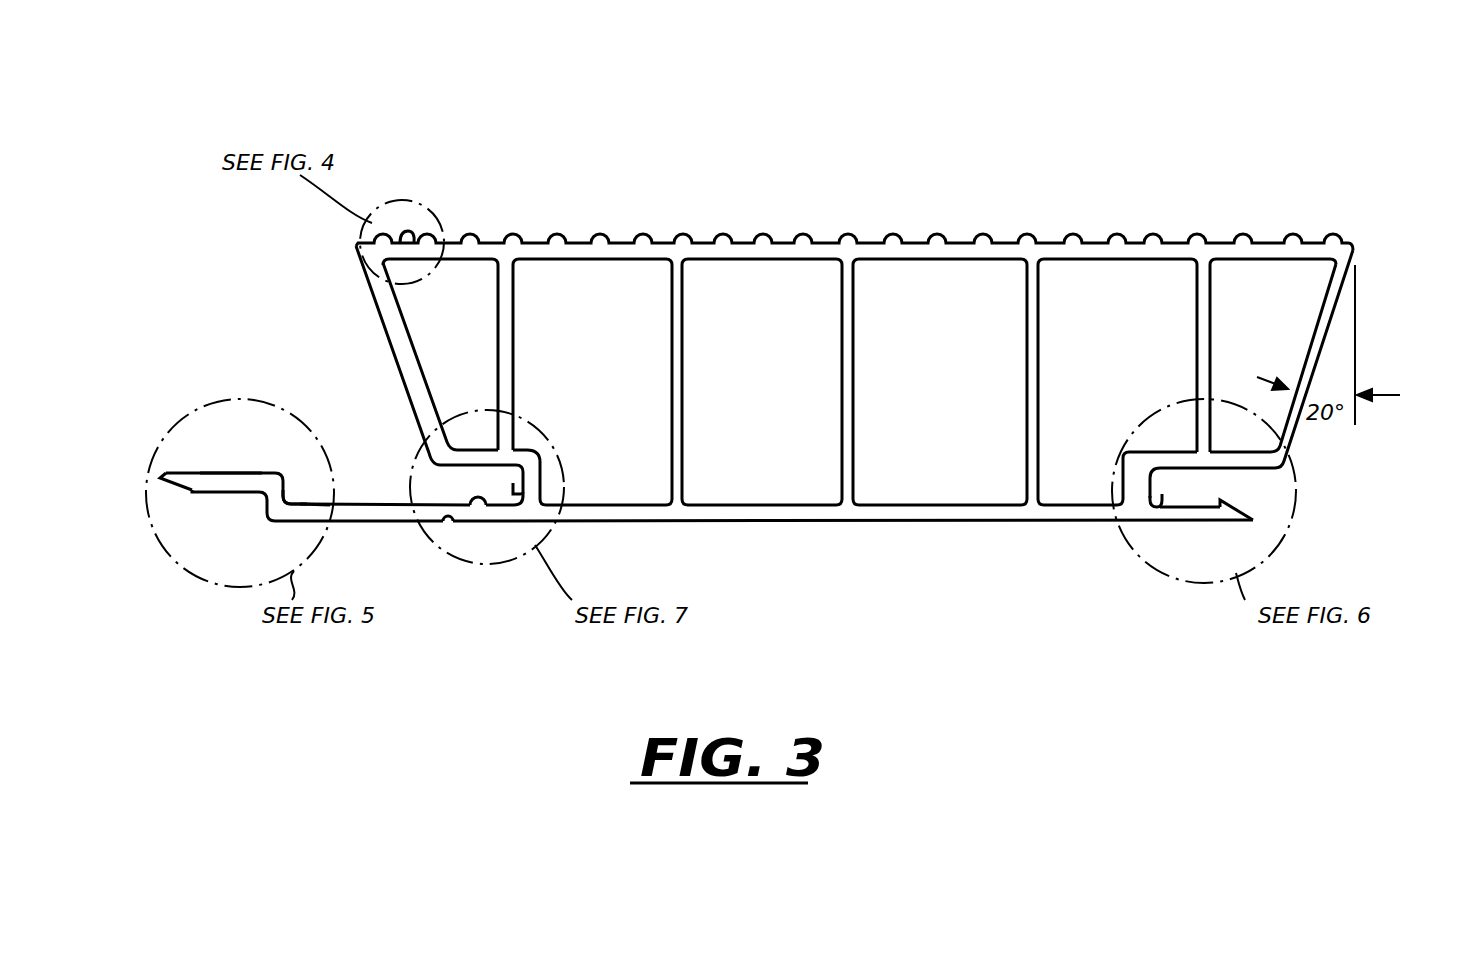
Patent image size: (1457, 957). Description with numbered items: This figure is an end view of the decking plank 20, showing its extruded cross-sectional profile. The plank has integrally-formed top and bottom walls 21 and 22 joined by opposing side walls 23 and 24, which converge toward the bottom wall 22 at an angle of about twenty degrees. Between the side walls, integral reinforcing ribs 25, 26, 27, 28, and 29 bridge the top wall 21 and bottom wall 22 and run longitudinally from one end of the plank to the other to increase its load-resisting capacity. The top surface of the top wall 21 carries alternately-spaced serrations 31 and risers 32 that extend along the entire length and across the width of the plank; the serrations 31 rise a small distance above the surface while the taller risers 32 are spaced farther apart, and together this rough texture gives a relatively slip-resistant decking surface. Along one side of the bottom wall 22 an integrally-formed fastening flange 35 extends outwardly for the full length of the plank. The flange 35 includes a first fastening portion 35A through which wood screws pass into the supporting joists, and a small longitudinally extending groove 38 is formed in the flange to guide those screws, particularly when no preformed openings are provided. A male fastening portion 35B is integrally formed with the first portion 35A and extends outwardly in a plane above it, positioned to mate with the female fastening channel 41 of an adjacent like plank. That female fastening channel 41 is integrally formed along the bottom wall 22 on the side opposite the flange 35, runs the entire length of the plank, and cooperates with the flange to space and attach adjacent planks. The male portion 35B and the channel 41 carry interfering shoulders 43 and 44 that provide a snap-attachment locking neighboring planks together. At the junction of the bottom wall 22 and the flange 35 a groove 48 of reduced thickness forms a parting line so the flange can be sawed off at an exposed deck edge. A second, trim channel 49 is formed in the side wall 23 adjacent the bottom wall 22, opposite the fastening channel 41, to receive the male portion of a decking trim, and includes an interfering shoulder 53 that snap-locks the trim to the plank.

The decking plank 20 is at (728, 147).
The top wall 21 is at (752, 274).
The bottom wall 22 is at (908, 520).
The side wall 23 is at (408, 370).
The side wall 24 is at (1327, 303).
The reinforcing rib 25 is at (508, 300).
The reinforcing rib 26 is at (672, 307).
The reinforcing rib 27 is at (847, 307).
The reinforcing rib 28 is at (1033, 303).
The reinforcing rib 29 is at (1200, 288).
The serrations 31 is at (387, 284).
The risers 32 is at (388, 237).
The fastening flange 35 is at (259, 498).
The first fastening portion 35A is at (304, 502).
The male fastening portion 35B is at (230, 473).
The groove 38 is at (322, 500).
The female fastening channel 41 is at (1150, 512).
The interfering shoulder 43 is at (172, 488).
The interfering shoulder 44 is at (1240, 510).
The groove of reduced thickness 48 is at (447, 518).
The trim channel 49 is at (513, 481).
The interfering shoulder 53 is at (478, 507).